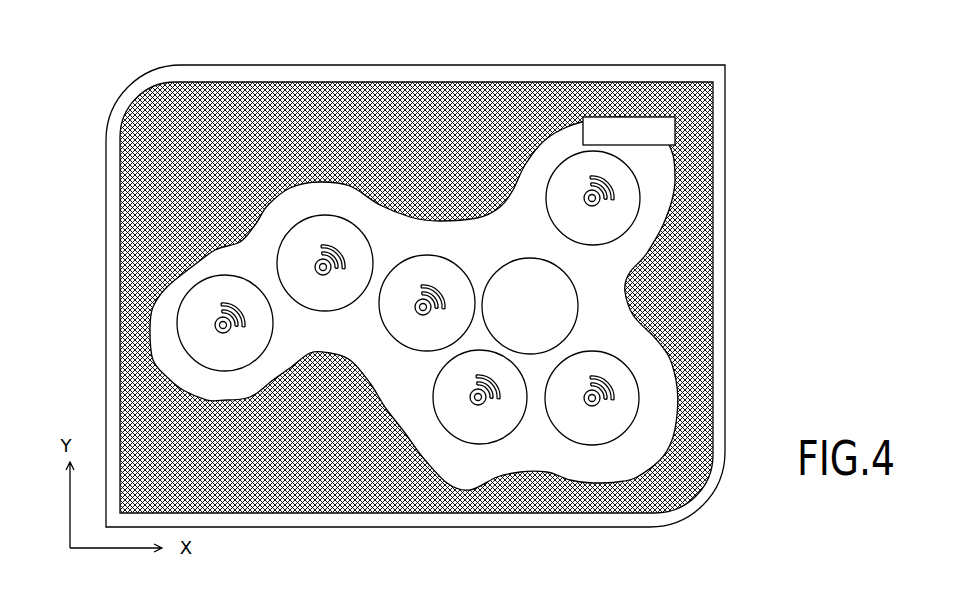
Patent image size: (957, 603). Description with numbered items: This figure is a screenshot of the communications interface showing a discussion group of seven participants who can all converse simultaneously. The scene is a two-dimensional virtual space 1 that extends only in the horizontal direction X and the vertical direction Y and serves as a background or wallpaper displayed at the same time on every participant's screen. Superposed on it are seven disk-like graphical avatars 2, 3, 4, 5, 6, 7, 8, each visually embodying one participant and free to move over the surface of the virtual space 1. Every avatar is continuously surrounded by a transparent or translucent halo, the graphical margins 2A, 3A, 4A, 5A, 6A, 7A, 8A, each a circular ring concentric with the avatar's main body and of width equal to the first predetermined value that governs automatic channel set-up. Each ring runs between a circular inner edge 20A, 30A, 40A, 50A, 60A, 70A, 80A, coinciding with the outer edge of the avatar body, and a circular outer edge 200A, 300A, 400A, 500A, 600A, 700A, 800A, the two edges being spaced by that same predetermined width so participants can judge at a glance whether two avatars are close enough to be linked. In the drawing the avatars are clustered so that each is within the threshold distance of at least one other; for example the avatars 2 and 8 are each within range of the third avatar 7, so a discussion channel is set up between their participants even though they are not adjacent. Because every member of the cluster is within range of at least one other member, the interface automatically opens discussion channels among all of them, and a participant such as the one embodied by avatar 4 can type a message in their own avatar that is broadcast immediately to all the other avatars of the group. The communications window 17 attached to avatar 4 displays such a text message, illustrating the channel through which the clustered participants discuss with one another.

The virtual space 1 is at (434, 296).
The graphical avatar 3 is at (442, 297).
The graphical margin 3A is at (447, 297).
The inner edge 30A is at (638, 306).
The outer edge 500A is at (720, 470).
The graphical avatar 8 is at (149, 324).
The graphical margin 8A is at (162, 319).
The inner edge 80A is at (168, 315).
The outer edge 800A is at (132, 340).
The graphical avatar 7 is at (278, 153).
The graphical margin 7A is at (325, 171).
The inner edge 70A is at (327, 186).
The outer edge 700A is at (295, 137).
The graphical avatar 2 is at (423, 419).
The graphical margin 2A is at (412, 411).
The inner edge 20A is at (396, 397).
The graphical avatar 6 is at (509, 471).
The graphical margin 6A is at (478, 459).
The inner edge 60A is at (504, 444).
The outer edge 600A is at (490, 461).
The graphical avatar 5 is at (673, 394).
The graphical margin 5A is at (624, 459).
The inner edge 50A is at (592, 444).
The graphical avatar 4 is at (674, 197).
The graphical margin 4A is at (664, 198).
The inner edge 40A is at (655, 198).
The outer edge 400A is at (692, 207).
The communications window 17 is at (615, 88).
The outer edge 200A is at (439, 128).
The outer edge 300A is at (510, 127).